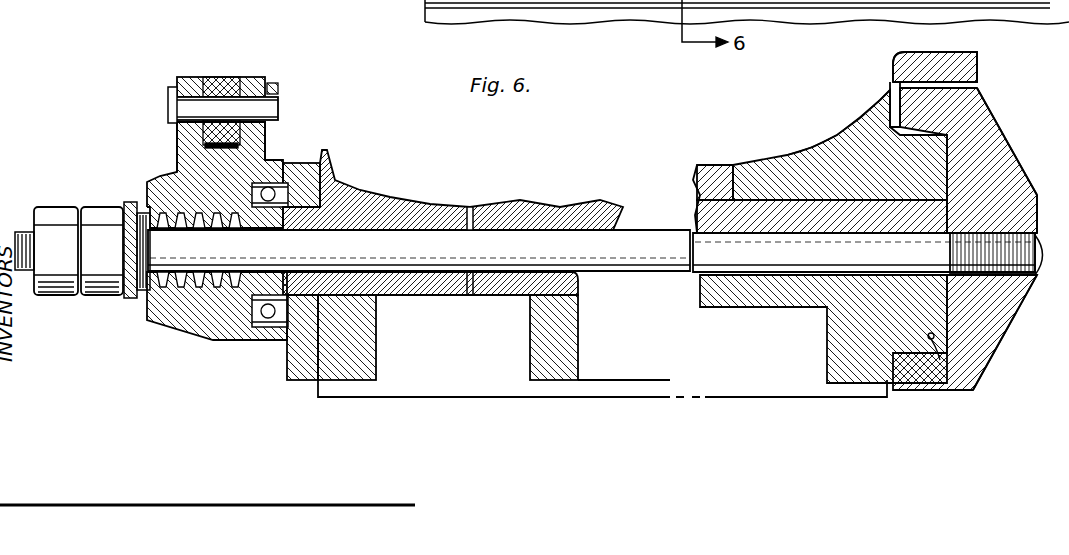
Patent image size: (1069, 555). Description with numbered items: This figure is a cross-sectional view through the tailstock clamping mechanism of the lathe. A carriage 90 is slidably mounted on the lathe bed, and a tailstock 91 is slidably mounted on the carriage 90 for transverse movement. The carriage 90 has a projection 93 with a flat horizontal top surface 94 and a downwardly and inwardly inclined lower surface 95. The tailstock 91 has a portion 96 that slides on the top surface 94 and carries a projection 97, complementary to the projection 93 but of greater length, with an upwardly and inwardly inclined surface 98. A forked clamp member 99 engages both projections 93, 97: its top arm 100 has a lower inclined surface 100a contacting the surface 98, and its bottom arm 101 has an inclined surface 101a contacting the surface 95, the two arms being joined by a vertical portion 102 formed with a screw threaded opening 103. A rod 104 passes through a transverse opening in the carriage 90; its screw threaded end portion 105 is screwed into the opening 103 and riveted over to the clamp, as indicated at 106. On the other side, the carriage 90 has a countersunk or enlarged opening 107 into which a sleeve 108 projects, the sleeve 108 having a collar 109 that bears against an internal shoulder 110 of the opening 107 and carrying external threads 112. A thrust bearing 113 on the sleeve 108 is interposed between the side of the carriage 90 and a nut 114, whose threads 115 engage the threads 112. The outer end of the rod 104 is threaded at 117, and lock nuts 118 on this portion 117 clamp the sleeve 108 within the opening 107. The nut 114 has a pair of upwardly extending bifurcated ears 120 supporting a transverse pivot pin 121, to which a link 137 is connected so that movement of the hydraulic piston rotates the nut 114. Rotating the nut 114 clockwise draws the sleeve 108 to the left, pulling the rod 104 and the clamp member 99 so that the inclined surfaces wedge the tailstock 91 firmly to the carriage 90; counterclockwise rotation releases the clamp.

The carriage 90 is at (800, 293).
The tailstock 91 is at (975, 62).
The projection 93 is at (980, 207).
The flat horizontal top surface 94 is at (990, 125).
The inclined lower surface 95 is at (936, 388).
The portion 96 is at (830, 153).
The projection 97 is at (977, 130).
The inclined surface 98 is at (895, 88).
The forked clamp member 99 is at (1039, 219).
The top arm 100 is at (920, 100).
The lower inclined surface 100a is at (867, 130).
The bottom arm 101 is at (905, 380).
The inclined surface 101a is at (975, 382).
The vertical portion 102 is at (985, 155).
The screw threaded opening 103 is at (990, 290).
The rod 104 is at (631, 270).
The screw threaded end portion 105 is at (975, 250).
The riveted end 106 is at (1045, 290).
The countersunk opening 107 is at (420, 297).
The sleeve 108 is at (305, 330).
The collar 109 is at (300, 165).
The internal shoulder 110 is at (315, 210).
The external threads 112 is at (200, 300).
The thrust bearing 113 is at (252, 305).
The nut 114 is at (165, 185).
The threads 115 is at (180, 160).
The screw threaded outer end 117 is at (34, 232).
The lock nuts 118 is at (97, 296).
The bifurcated ears 120 is at (190, 77).
The transverse pivot pin 121 is at (248, 105).
The link 137 is at (215, 77).